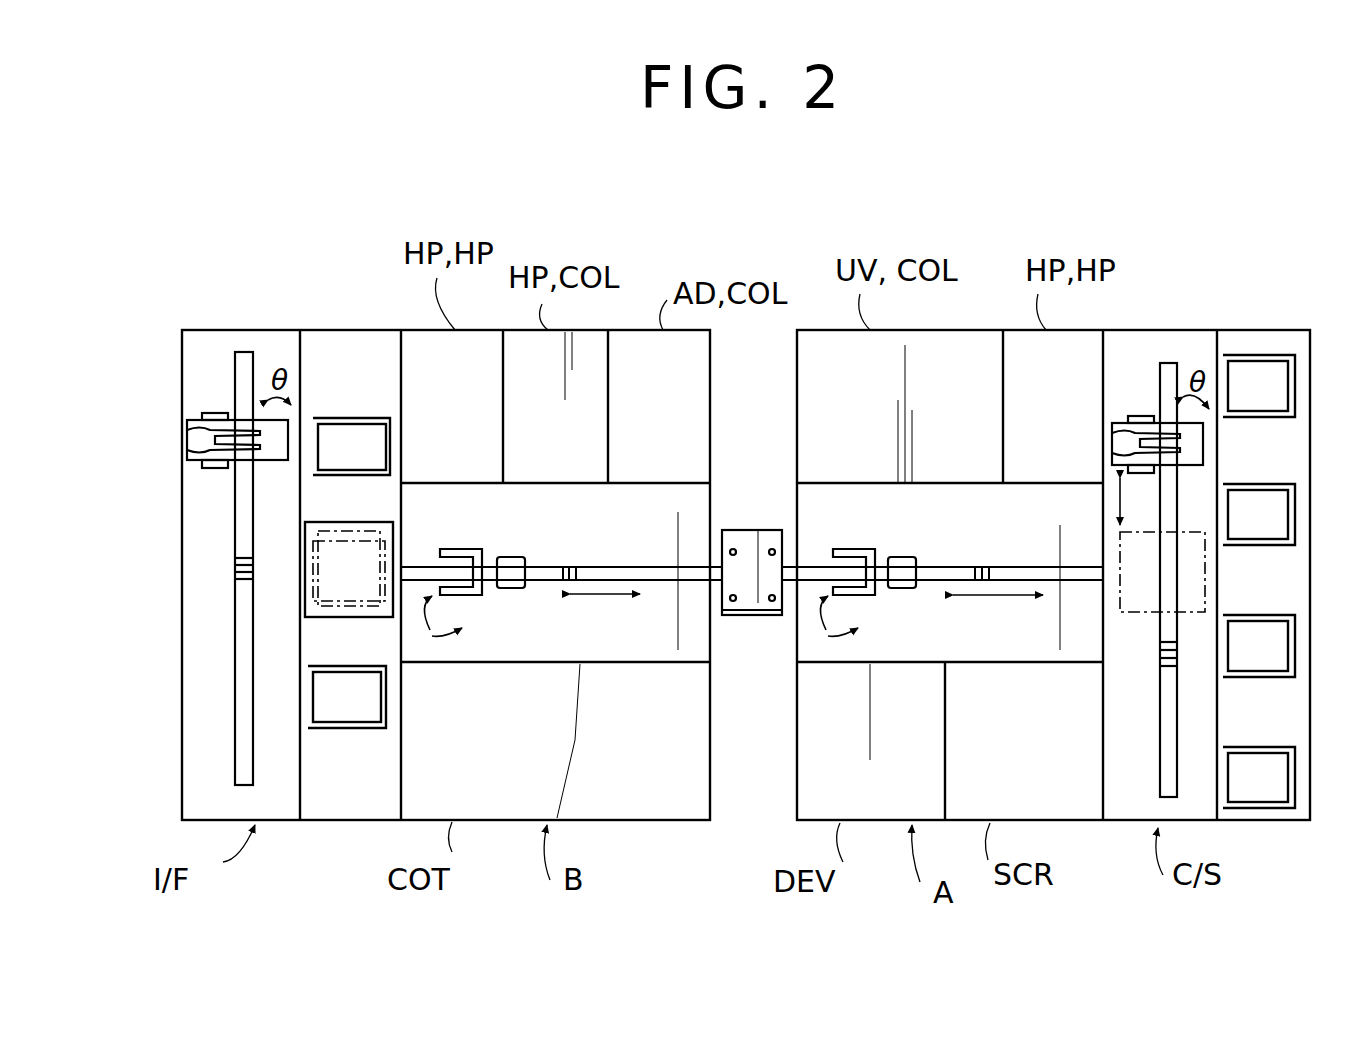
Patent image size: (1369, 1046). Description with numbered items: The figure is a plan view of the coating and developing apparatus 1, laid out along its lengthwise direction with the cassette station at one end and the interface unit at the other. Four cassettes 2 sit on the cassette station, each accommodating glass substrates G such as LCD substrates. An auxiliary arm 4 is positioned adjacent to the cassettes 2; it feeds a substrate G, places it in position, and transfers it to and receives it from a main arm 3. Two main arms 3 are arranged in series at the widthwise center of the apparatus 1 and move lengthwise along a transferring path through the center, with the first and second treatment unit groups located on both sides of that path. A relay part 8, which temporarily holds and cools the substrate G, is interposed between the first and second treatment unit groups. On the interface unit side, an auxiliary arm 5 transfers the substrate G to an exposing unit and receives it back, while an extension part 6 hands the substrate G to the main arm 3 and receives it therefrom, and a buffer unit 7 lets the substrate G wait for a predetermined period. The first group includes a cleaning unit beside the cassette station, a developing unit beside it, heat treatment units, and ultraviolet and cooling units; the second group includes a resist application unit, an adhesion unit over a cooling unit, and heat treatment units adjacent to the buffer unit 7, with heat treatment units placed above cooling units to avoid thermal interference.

The coating and developing apparatus 1 is at (898, 232).
The cassette 2 is at (1295, 385).
The main arm 3 is at (520, 557).
The auxiliary arm 4 is at (1143, 410).
The auxiliary arm 5 is at (215, 402).
The extension part 6 is at (385, 520).
The buffer unit 7 is at (344, 415).
The relay part 8 is at (752, 617).
The glass substrate G is at (1265, 785).